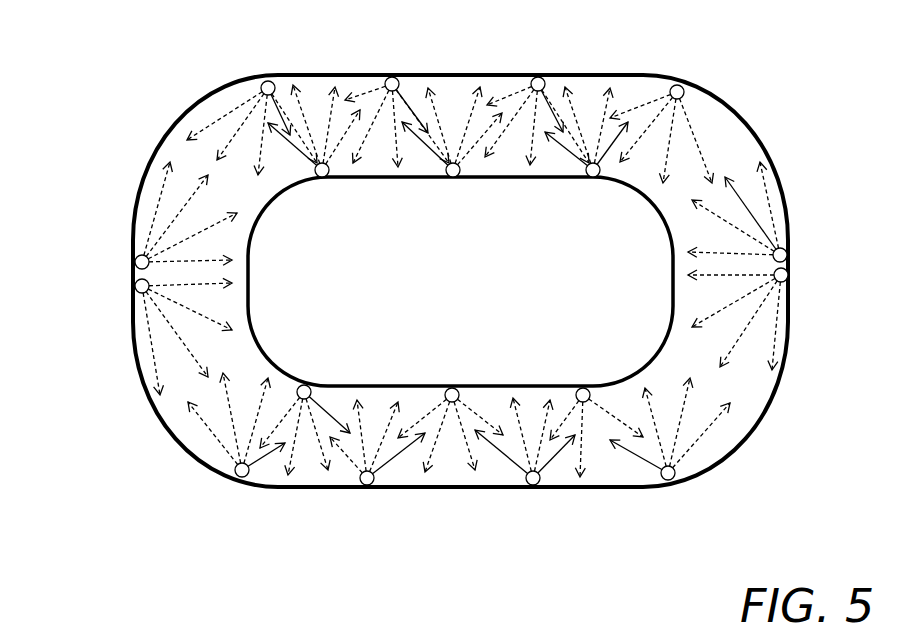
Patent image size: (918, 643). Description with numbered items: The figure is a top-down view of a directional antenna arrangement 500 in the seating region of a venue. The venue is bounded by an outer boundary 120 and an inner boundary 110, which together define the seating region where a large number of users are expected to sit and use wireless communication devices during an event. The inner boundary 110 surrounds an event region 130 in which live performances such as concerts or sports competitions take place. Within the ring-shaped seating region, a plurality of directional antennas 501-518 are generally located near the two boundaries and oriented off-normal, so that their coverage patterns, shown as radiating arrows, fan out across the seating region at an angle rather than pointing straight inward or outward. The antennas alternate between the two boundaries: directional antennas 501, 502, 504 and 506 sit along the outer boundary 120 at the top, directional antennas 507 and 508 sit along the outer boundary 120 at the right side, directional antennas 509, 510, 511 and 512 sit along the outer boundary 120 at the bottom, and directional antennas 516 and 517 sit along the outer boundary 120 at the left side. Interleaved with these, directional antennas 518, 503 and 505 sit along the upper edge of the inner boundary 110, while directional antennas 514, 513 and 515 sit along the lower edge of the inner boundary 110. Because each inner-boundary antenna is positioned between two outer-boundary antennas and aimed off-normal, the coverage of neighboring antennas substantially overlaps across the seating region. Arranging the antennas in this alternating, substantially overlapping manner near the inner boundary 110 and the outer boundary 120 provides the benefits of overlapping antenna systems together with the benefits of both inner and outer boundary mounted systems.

The directional antenna arrangement 500 is at (97, 65).
The outer boundary 120 is at (688, 86).
The inner boundary 110 is at (268, 200).
The event region 130 is at (410, 268).
The directional antenna 501 is at (267, 80).
The directional antenna 502 is at (392, 77).
The directional antenna 503 is at (453, 178).
The directional antenna 504 is at (539, 77).
The directional antenna 505 is at (592, 178).
The directional antenna 506 is at (682, 87).
The directional antenna 507 is at (788, 254).
The directional antenna 508 is at (789, 276).
The directional antenna 509 is at (669, 481).
The directional antenna 510 is at (534, 486).
The directional antenna 511 is at (368, 486).
The directional antenna 512 is at (242, 478).
The directional antenna 513 is at (452, 388).
The directional antenna 514 is at (308, 385).
The directional antenna 515 is at (583, 388).
The directional antenna 516 is at (135, 286).
The directional antenna 517 is at (135, 262).
The directional antenna 518 is at (323, 178).